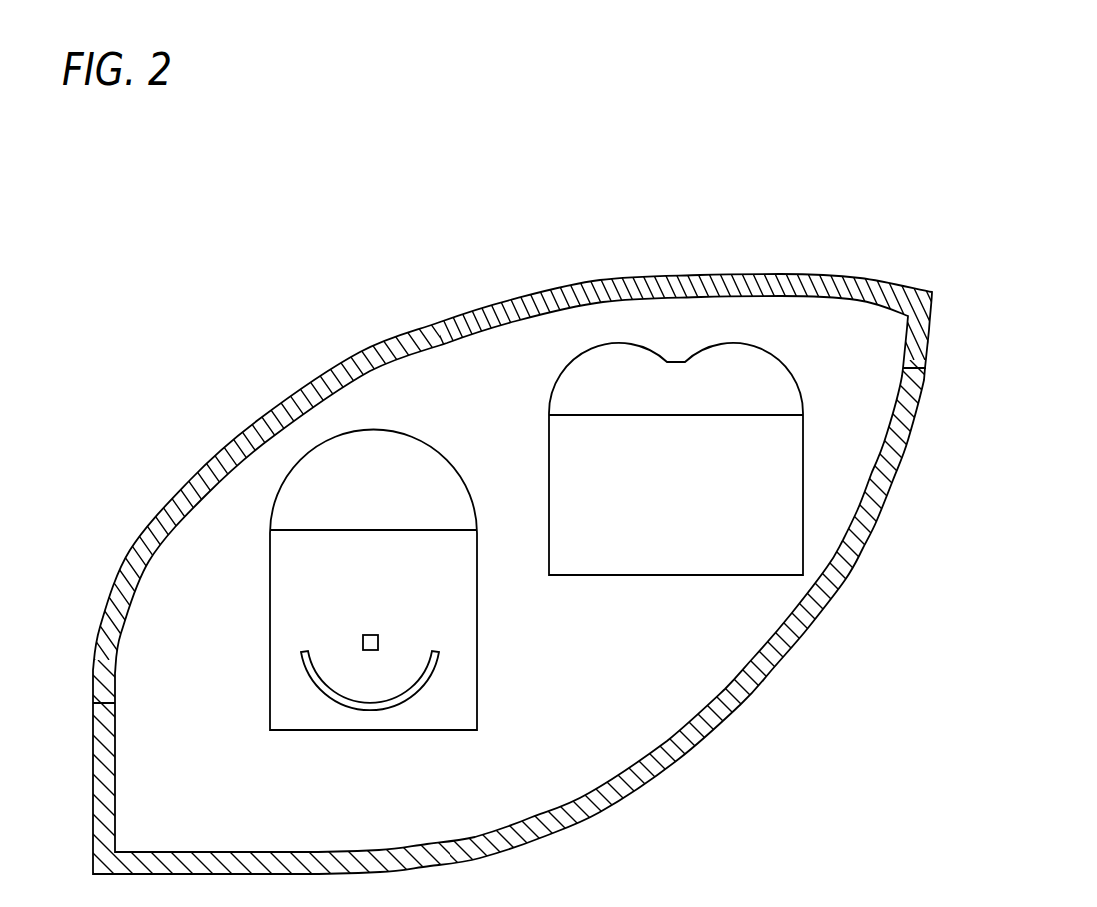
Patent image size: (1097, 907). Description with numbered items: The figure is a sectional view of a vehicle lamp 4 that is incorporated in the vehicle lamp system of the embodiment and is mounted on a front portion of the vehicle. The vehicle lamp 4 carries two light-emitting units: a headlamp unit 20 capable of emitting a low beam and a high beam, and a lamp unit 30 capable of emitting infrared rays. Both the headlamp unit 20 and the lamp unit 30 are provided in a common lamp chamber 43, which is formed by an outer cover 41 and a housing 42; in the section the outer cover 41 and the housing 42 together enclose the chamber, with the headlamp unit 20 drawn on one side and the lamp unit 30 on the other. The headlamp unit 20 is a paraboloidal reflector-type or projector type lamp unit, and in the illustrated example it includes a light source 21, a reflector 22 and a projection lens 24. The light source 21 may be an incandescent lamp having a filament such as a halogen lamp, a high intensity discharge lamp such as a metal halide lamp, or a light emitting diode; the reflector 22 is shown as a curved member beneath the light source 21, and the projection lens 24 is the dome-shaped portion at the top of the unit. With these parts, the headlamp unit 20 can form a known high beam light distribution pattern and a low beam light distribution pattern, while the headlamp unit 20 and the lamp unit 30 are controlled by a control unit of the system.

The vehicle lamp 4 is at (285, 245).
The headlamp unit 20 is at (270, 467).
The light source 21 is at (363, 640).
The reflector 22 is at (311, 690).
The projection lens 24 is at (423, 441).
The lamp unit 30 is at (666, 316).
The outer cover 41 is at (728, 275).
The housing 42 is at (875, 532).
The lamp chamber 43 is at (582, 669).